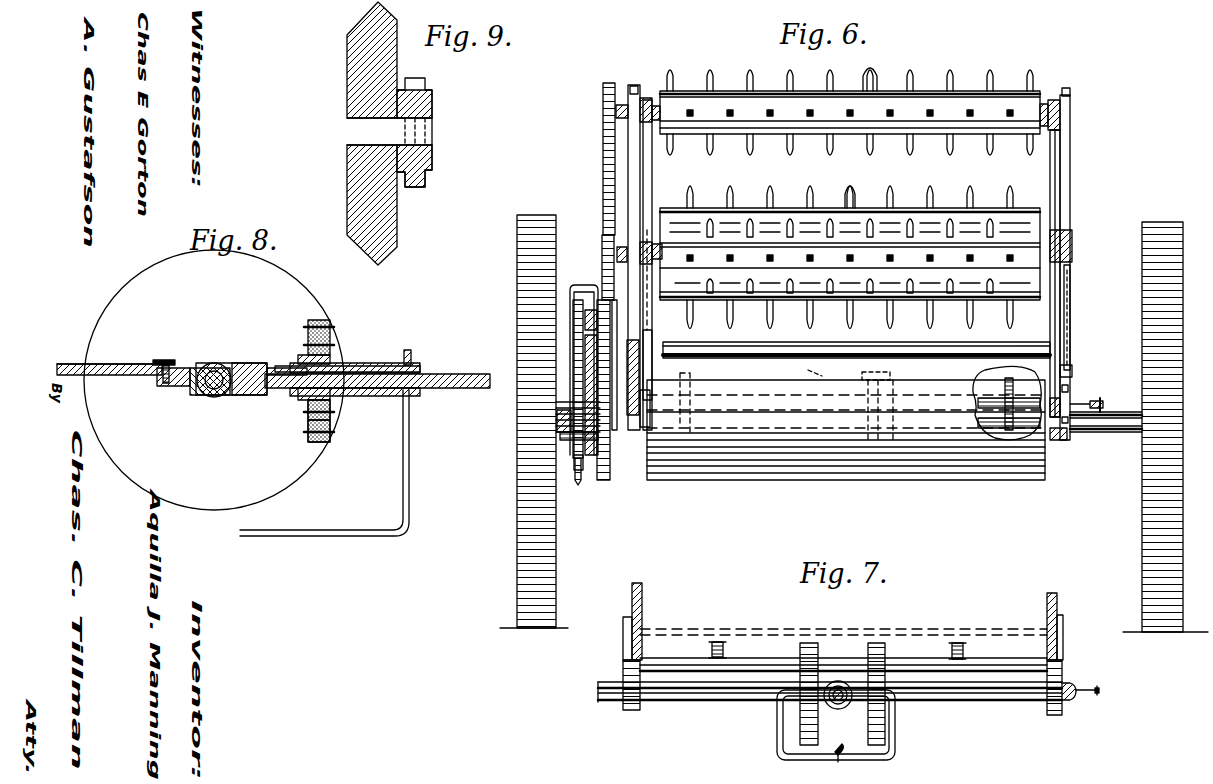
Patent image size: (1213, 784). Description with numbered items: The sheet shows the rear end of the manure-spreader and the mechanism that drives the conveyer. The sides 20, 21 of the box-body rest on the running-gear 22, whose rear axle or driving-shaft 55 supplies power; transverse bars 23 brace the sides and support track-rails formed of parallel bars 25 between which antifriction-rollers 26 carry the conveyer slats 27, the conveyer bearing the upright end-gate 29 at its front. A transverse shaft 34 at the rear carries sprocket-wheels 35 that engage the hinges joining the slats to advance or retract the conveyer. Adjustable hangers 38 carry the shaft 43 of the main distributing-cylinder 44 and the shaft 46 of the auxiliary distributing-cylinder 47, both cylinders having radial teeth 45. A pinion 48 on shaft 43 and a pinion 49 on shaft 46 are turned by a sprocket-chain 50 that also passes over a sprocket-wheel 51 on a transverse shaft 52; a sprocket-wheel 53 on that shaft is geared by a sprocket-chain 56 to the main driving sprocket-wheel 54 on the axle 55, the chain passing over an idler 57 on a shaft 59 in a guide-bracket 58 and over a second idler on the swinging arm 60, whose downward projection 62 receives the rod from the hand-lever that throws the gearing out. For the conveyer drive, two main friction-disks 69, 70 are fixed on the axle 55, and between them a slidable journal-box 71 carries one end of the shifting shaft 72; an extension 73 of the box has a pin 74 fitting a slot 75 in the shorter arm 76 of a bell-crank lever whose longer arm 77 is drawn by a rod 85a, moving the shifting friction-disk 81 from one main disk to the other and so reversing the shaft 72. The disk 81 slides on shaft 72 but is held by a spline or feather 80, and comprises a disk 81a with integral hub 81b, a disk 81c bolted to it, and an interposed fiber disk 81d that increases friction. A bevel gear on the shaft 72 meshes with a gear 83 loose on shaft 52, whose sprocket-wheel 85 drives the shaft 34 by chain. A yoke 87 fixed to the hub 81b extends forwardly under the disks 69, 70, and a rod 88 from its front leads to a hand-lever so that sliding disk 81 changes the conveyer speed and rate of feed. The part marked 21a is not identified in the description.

In FIG. 6, the side of the body 20 is at (640, 158).
In FIG. 7, the side of the body 20 is at (645, 600).
In FIG. 6, the side of the body 21 is at (1058, 180).
In FIG. 6, the bearing 21a is at (1072, 393).
In FIG. 6, the running-gear 22 is at (520, 520).
In FIG. 7, the transverse bars 23 is at (995, 665).
In FIG. 7, the parallel bars 25 is at (990, 617).
In FIG. 7, the antifriction-rollers 26 is at (717, 642).
In FIG. 6, the slats 27 is at (795, 483).
In FIG. 7, the slats 27 is at (762, 630).
In FIG. 6, the end-gate 29 is at (1088, 118).
In FIG. 6, the transverse shaft 34 is at (998, 415).
In FIG. 6, the sprocket-wheel 35 is at (1006, 386).
In FIG. 6, the hanger 38 is at (620, 480).
In FIG. 6, the shaft 43 is at (618, 262).
In FIG. 6, the main distributing-cylinder 44 is at (938, 222).
In FIG. 6, the radial teeth 45 is at (890, 110).
In FIG. 6, the shaft 46 is at (604, 103).
In FIG. 6, the auxiliary distributing-cylinder 47 is at (958, 100).
In FIG. 6, the sprocket wheel or pinion 48 is at (604, 250).
In FIG. 6, the sprocket wheel or pinion 49 is at (606, 118).
In FIG. 6, the sprocket-chain 50 is at (604, 188).
In FIG. 6, the sprocket-wheel 51 is at (578, 470).
In FIG. 6, the transverse shaft 52 is at (560, 420).
In FIG. 6, the sprocket-wheel 53 is at (565, 430).
In FIG. 6, the main driving sprocket-wheel 54 is at (578, 490).
In FIG. 8, the rear axle or driving-shaft 55 is at (216, 397).
In FIG. 7, the rear axle or driving-shaft 55 is at (612, 695).
In FIG. 6, the sprocket-chain 56 is at (575, 345).
In FIG. 6, the idler 57 is at (578, 305).
In FIG. 6, the guide-bracket 58 is at (580, 285).
In FIG. 6, the shaft 59 is at (572, 320).
In FIG. 6, the arm 60 is at (632, 348).
In FIG. 6, the downward projection 62 is at (555, 404).
In FIG. 6, the main friction-disk 69 is at (820, 374).
In FIG. 7, the main friction-disk 69 is at (806, 643).
In FIG. 8, the main friction-disk 70 is at (214, 380).
In FIG. 6, the main friction-disk 70 is at (890, 374).
In FIG. 7, the main friction-disk 70 is at (880, 643).
In FIG. 8, the journal-box 71 is at (220, 362).
In FIG. 8, the shifting shaft 72 is at (462, 372).
In FIG. 7, the shifting shaft 72 is at (838, 700).
In FIG. 8, the extension 73 is at (190, 392).
In FIG. 8, the pin 74 is at (165, 364).
In FIG. 8, the slot 75 is at (160, 380).
In FIG. 8, the shorter arm of the bell-crank lever 76 is at (115, 376).
In FIG. 8, the bell-crank lever (longer arm) 77 is at (271, 366).
In FIG. 6, the bell-crank lever (longer arm) 77 is at (1088, 410).
In FIG. 7, the bell-crank lever (longer arm) 77 is at (1080, 688).
In FIG. 8, the spline or feather 80 is at (296, 360).
In FIG. 7, the spline or feather 80 is at (841, 685).
In FIG. 8, the shifting friction-disk 81 is at (306, 403).
In FIG. 7, the shifting friction-disk 81 is at (830, 680).
In FIG. 8, the disk 81a is at (308, 440).
In FIG. 8, the hub 81b is at (362, 364).
In FIG. 8, the disk 81c is at (331, 412).
In FIG. 8, the fiber disk 81d is at (320, 440).
In FIG. 9, the beveled gear 83 is at (348, 178).
In FIG. 6, the beveled gear 83 is at (850, 350).
In FIG. 9, the sprocket-wheel 85 is at (433, 106).
In FIG. 6, the sprocket-wheel 85 is at (1104, 404).
In FIG. 7, the rod 85a is at (1100, 688).
In FIG. 8, the yoke 87 is at (409, 479).
In FIG. 7, the yoke 87 is at (778, 733).
In FIG. 7, the rod 88 is at (848, 737).